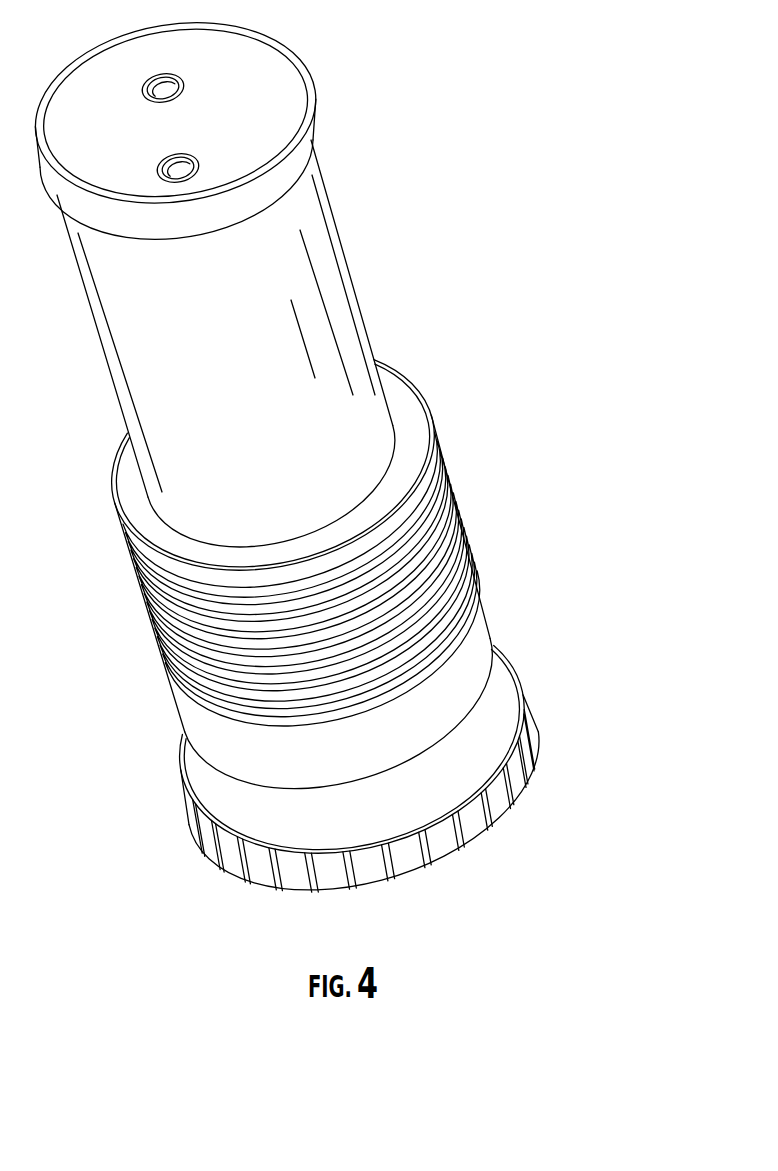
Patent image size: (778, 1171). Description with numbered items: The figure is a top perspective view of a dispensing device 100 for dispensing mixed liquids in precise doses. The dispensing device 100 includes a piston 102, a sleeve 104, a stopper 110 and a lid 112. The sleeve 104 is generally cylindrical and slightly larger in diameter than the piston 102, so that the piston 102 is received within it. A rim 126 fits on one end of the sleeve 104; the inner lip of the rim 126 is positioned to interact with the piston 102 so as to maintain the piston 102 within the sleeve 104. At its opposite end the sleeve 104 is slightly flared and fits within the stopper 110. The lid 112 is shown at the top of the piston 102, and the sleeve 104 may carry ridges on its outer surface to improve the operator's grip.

The dispensing device 100 is at (334, 478).
The piston 102 is at (357, 338).
The sleeve 104 is at (442, 677).
The stopper 110 is at (462, 830).
The lid 112 is at (213, 107).
The rim 126 is at (412, 425).